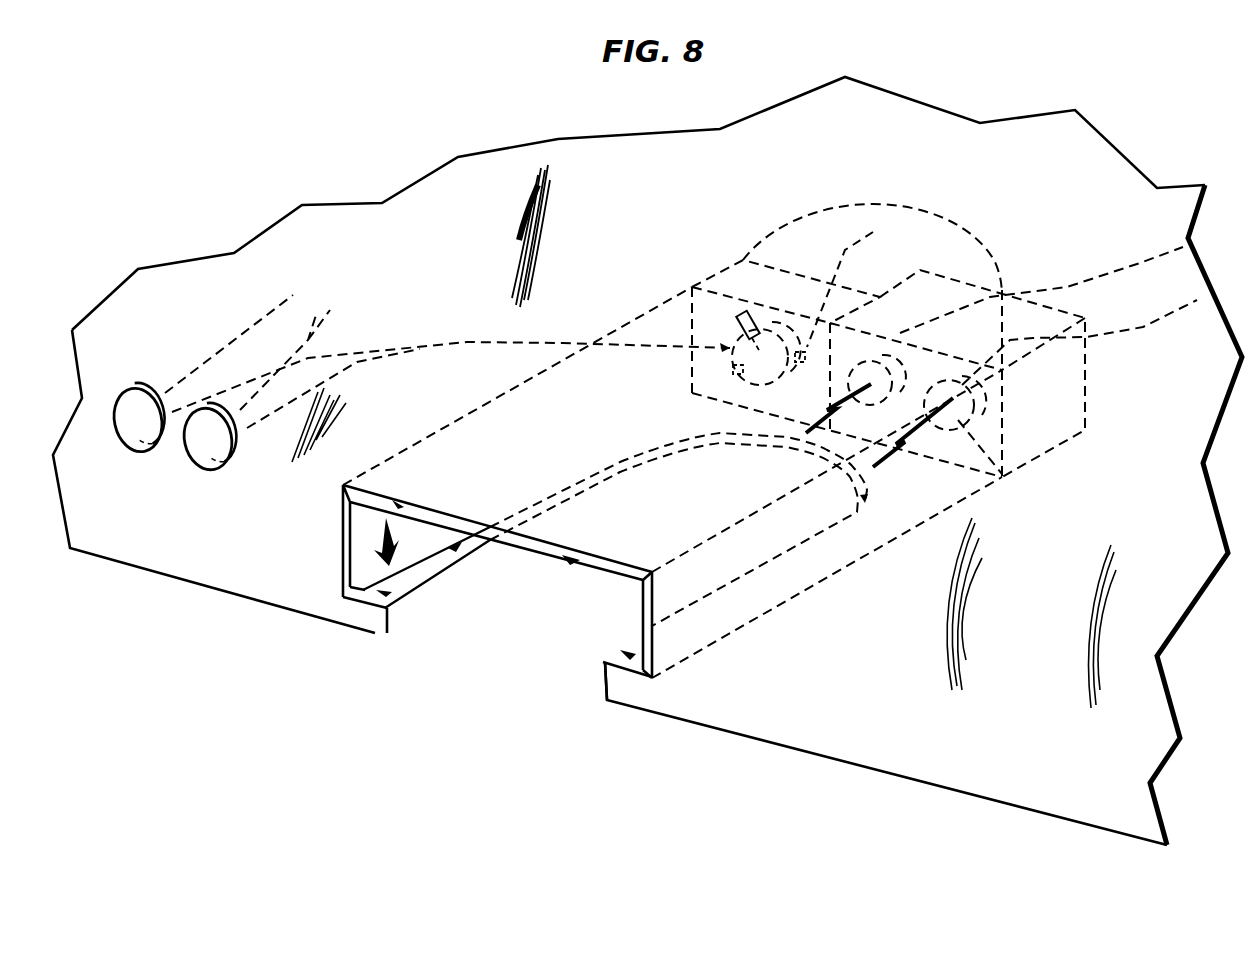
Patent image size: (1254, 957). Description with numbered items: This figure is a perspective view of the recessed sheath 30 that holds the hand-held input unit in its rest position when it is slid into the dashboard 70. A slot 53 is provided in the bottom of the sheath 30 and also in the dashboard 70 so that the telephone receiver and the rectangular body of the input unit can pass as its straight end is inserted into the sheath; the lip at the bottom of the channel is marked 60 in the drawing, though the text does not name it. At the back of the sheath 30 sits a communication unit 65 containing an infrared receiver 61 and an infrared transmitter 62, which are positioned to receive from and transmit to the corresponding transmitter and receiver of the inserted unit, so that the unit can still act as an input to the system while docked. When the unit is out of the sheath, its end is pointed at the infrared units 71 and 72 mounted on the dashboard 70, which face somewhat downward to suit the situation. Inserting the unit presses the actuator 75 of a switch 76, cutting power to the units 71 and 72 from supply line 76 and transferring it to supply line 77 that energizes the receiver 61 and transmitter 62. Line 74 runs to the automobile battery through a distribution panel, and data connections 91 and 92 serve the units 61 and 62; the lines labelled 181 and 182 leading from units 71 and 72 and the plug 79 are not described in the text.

The sheath 30 is at (812, 595).
The slot 53 is at (473, 555).
The flange 60 is at (395, 595).
The infrared receiver 61 is at (893, 360).
The infrared transmitter 62 is at (1008, 478).
The communication unit 65 is at (1086, 396).
The dashboard 70 is at (152, 572).
The infrared unit 71 is at (213, 457).
The infrared unit 72 is at (140, 430).
The line 74 is at (845, 250).
The actuator 75 is at (735, 367).
The switch / supply line 76 is at (455, 342).
The supply line 77 is at (920, 205).
The plug 79 is at (745, 315).
The data connection 91 is at (1145, 328).
The data connection 92 is at (1122, 268).
The cable 181 is at (293, 343).
The cable 182 is at (247, 337).